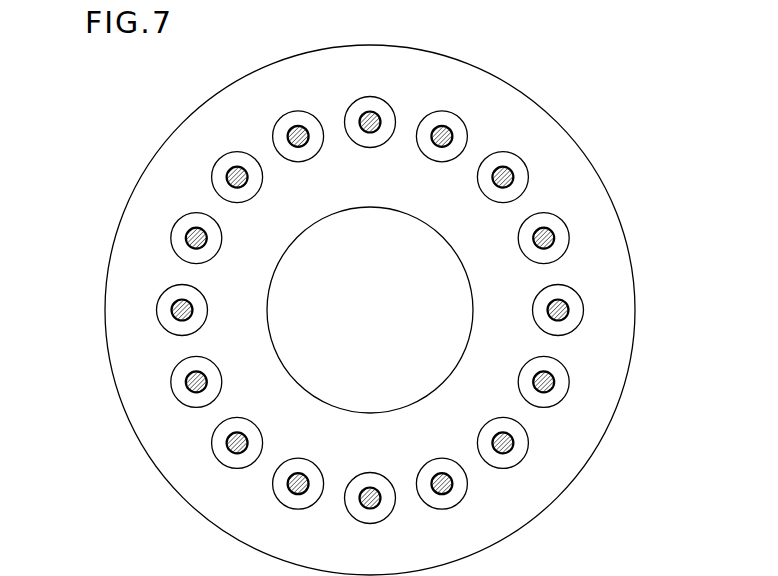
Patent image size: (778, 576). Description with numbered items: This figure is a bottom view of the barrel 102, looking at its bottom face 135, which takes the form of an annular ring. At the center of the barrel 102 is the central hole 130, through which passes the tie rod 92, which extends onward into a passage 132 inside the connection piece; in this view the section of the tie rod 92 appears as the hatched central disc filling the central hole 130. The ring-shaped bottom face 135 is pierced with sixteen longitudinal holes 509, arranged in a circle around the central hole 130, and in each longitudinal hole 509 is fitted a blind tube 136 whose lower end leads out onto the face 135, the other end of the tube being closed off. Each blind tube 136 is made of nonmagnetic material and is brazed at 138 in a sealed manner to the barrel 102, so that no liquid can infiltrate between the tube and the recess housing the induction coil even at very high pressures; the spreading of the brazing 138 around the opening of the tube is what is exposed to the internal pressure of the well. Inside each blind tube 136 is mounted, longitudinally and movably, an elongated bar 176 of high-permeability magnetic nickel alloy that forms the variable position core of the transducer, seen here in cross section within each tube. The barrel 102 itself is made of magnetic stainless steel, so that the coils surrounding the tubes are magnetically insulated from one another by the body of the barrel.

The tie rod 92 is at (320, 283).
The barrel 102 is at (407, 310).
The central hole 130 is at (437, 226).
The passage 132 is at (636, 364).
The bottom face 135 is at (608, 280).
The blind tube 136 is at (174, 243).
The brazing 138 is at (187, 399).
The elongated bar 176 is at (288, 489).
The longitudinal hole 509 is at (182, 232).